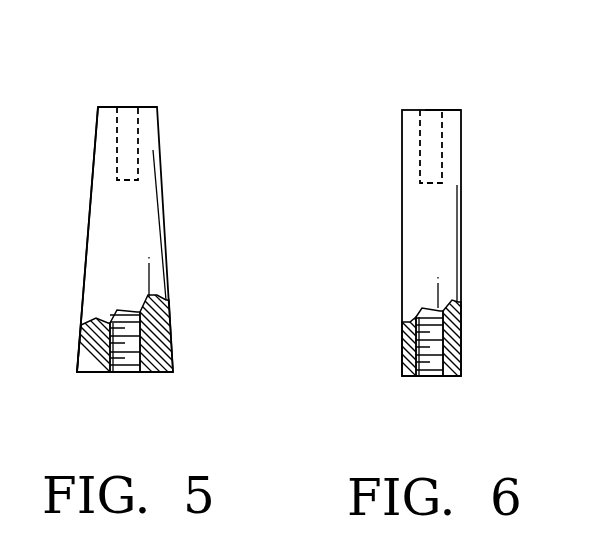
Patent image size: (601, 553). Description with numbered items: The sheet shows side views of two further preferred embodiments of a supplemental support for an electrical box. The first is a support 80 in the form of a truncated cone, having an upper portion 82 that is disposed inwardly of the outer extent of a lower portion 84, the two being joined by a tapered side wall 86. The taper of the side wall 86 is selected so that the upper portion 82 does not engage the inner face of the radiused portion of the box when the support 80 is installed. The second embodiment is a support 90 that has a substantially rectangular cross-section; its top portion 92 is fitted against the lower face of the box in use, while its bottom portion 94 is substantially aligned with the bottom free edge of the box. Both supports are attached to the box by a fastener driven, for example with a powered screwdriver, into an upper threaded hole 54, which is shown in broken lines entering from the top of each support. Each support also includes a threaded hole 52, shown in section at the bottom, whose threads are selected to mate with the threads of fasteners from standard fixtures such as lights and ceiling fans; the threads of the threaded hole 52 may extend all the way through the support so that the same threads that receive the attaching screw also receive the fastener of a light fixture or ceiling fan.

In FIG. 5, the threaded hole 52 is at (128, 372).
In FIG. 6, the threaded hole 52 is at (422, 376).
In FIG. 5, the upper threaded hole 54 is at (120, 124).
In FIG. 6, the upper threaded hole 54 is at (422, 125).
In FIG. 5, the support 80 is at (190, 267).
In FIG. 5, the upper portion 82 is at (157, 110).
In FIG. 5, the lower portion 84 is at (172, 372).
In FIG. 5, the tapered side wall 86 is at (92, 185).
In FIG. 6, the support 90 is at (495, 187).
In FIG. 6, the top portion 92 is at (462, 112).
In FIG. 6, the bottom portion 94 is at (458, 373).